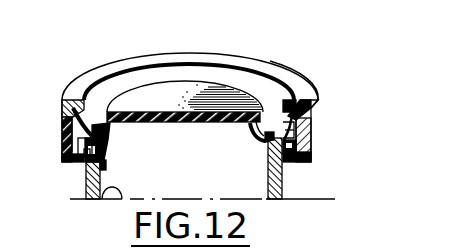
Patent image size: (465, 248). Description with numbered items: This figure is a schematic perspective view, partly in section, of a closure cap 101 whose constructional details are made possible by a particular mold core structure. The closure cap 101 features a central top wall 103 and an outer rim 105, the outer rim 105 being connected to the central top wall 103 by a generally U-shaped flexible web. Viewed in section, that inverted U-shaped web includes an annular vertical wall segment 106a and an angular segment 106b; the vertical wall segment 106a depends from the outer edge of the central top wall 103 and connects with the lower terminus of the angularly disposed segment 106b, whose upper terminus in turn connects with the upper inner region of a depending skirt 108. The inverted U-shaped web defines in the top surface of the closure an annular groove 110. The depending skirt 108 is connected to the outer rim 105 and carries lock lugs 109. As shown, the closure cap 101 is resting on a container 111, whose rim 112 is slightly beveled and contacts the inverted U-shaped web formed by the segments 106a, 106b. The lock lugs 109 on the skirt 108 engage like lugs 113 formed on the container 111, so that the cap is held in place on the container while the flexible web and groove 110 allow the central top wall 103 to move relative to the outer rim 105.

The closure cap 101 is at (66, 88).
The central top wall 103 is at (167, 93).
The outer rim 105 is at (300, 96).
The annular vertical wall segment 106a is at (262, 150).
The angular segment 106b is at (270, 98).
The depending skirt 108 is at (311, 118).
The lock lugs 109 is at (82, 166).
The annular groove 110 is at (138, 82).
The container 111 is at (115, 202).
The rim 112 is at (104, 168).
The lugs 113 is at (296, 133).